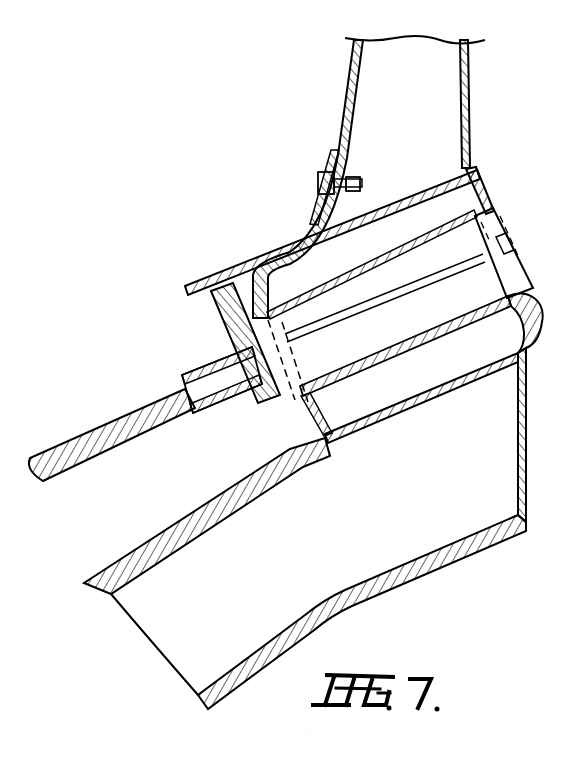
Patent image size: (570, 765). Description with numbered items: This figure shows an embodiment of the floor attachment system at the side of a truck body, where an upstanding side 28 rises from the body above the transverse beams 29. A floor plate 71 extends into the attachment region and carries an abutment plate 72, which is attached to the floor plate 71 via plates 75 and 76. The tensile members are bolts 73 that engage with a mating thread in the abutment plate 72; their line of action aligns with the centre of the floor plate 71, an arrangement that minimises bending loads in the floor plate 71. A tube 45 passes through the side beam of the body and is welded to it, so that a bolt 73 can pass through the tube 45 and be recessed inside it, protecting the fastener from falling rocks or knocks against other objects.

The upstanding sides 28 is at (468, 118).
The transverse beams 29 is at (372, 592).
The tube 45 is at (446, 334).
The floor plate 71 is at (122, 433).
The abutment plate 72 is at (213, 308).
The bolts 73 is at (380, 304).
The plate 75 is at (230, 413).
The plate 76 is at (210, 367).